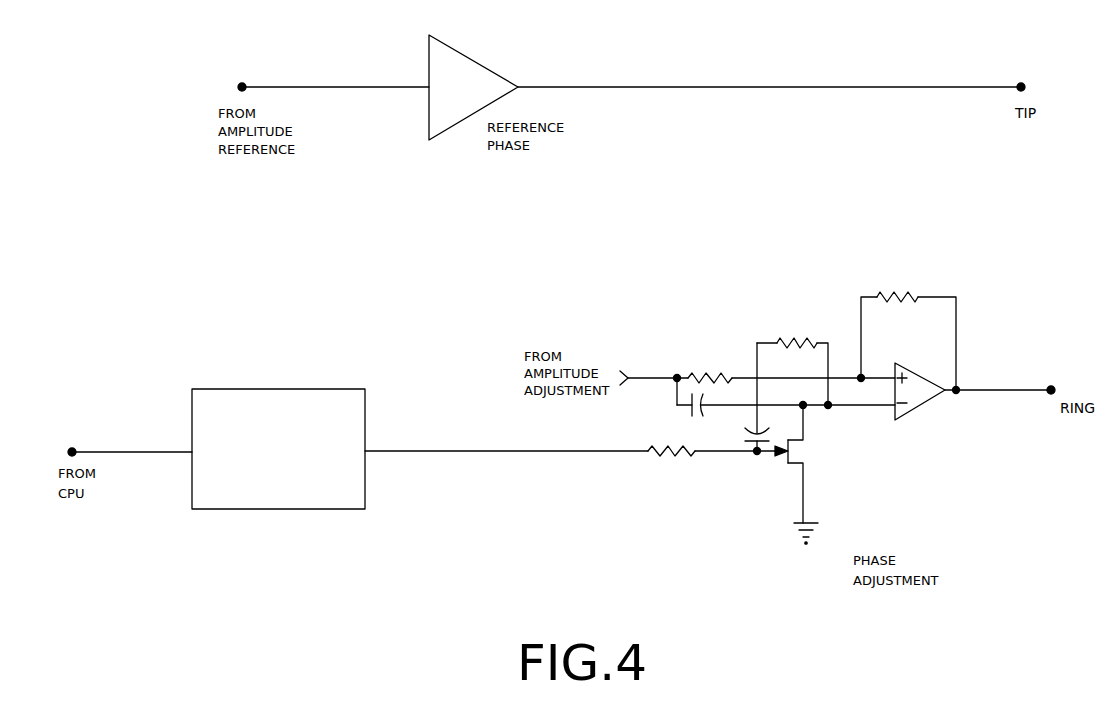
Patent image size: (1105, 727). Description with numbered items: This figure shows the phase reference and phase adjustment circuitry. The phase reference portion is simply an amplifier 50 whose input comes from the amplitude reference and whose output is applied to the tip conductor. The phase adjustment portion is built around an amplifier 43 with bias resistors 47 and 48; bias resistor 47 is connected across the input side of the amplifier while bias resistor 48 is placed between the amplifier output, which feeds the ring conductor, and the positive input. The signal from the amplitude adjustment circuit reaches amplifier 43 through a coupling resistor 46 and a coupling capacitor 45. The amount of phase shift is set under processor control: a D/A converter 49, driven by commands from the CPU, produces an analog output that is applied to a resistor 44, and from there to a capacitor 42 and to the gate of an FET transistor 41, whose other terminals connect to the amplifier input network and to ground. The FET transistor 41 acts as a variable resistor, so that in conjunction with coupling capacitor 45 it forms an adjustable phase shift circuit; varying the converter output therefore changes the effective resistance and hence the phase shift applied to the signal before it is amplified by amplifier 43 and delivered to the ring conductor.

The FET transistor 41 is at (800, 452).
The capacitor 42 is at (742, 439).
The amplifier 43 is at (918, 408).
The resistor 44 is at (671, 467).
The coupling capacitor 45 is at (689, 413).
The coupling resistor 46 is at (710, 365).
The bias resistor 47 is at (792, 361).
The bias resistor 48 is at (908, 327).
The D/A converter 49 is at (278, 437).
The amplifier 50 is at (473, 83).